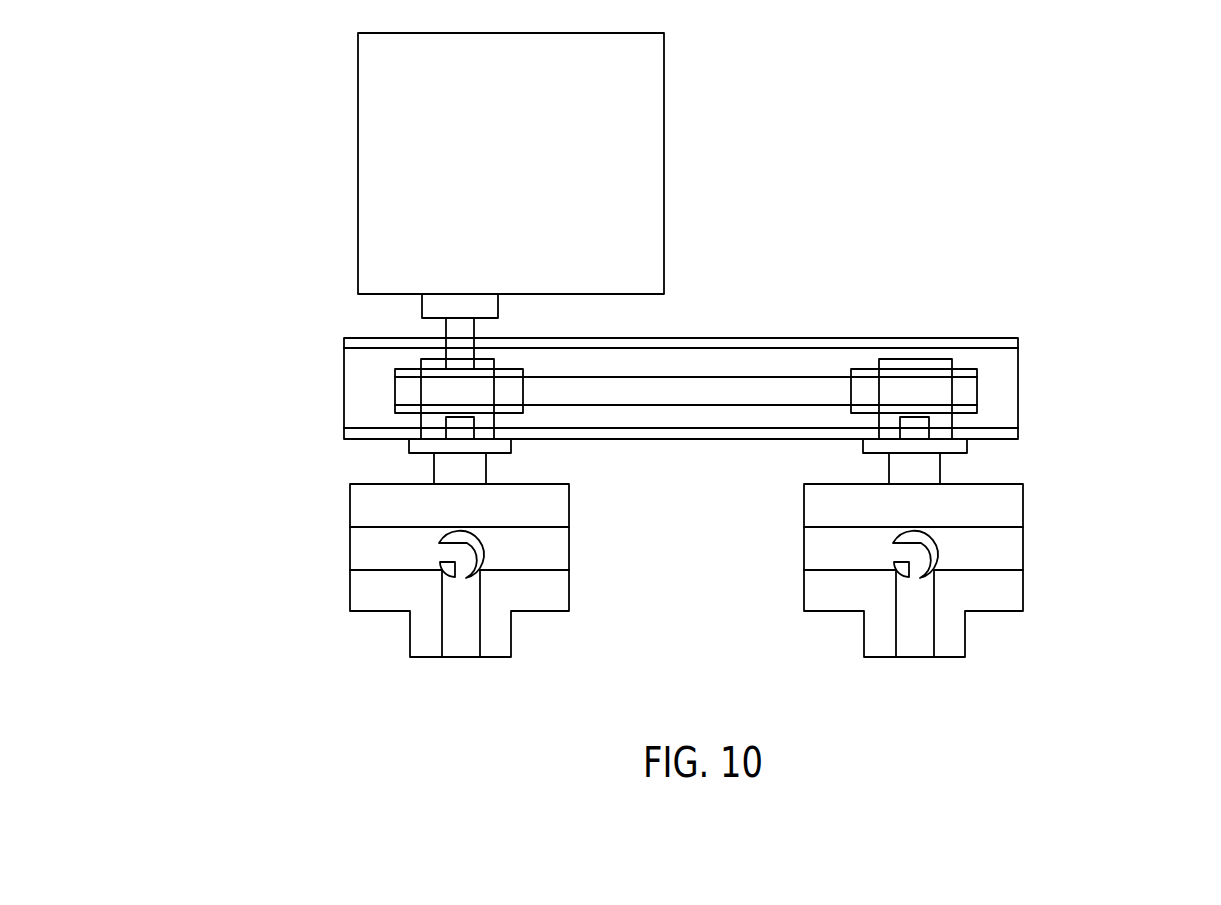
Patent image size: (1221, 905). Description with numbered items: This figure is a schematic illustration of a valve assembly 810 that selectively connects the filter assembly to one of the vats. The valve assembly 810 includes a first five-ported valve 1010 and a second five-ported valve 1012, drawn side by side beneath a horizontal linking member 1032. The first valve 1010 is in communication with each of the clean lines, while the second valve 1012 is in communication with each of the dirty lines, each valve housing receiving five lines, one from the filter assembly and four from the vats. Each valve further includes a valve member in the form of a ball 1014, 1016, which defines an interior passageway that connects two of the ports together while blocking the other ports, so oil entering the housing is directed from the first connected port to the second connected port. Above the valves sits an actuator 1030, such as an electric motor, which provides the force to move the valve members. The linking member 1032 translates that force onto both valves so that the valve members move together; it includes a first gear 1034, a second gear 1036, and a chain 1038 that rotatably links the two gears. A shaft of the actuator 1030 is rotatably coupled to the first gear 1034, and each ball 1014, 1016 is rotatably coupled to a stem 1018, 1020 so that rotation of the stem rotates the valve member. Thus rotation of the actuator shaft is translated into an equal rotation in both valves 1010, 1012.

The valve assembly 810 is at (913, 115).
The actuator 1030 is at (632, 137).
The linking member 1032 is at (1000, 344).
The chain 1038 is at (752, 388).
The first gear 1034 is at (420, 383).
The second gear 1036 is at (933, 385).
The stem 1018 is at (446, 467).
The stem 1020 is at (917, 467).
The first five-ported valve 1010 is at (367, 505).
The second five-ported valve 1012 is at (1000, 505).
The ball 1014 is at (477, 552).
The ball 1016 is at (928, 550).